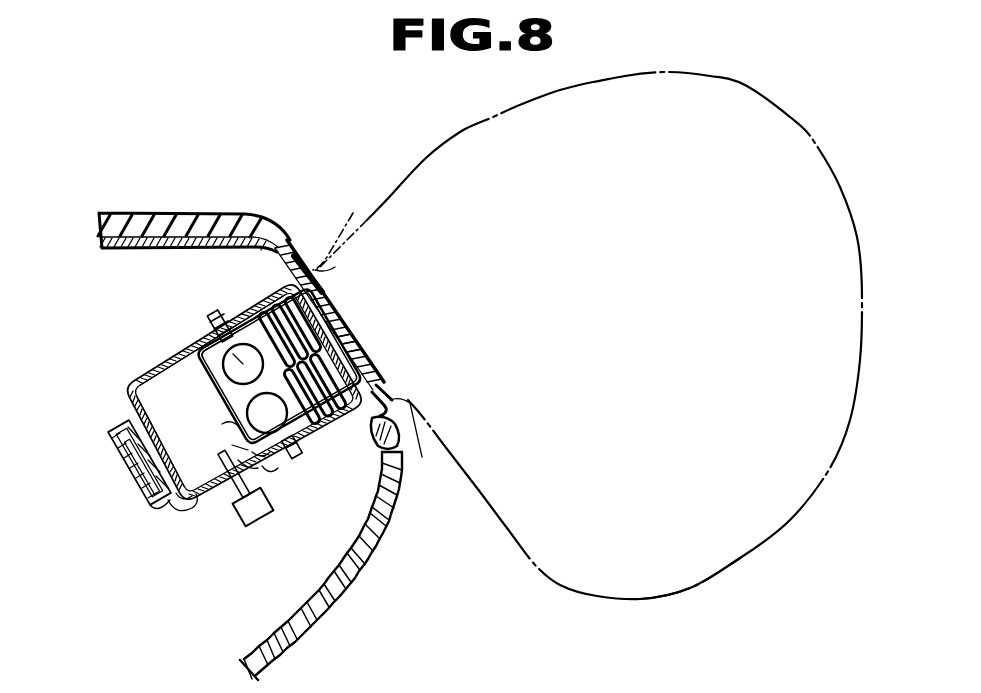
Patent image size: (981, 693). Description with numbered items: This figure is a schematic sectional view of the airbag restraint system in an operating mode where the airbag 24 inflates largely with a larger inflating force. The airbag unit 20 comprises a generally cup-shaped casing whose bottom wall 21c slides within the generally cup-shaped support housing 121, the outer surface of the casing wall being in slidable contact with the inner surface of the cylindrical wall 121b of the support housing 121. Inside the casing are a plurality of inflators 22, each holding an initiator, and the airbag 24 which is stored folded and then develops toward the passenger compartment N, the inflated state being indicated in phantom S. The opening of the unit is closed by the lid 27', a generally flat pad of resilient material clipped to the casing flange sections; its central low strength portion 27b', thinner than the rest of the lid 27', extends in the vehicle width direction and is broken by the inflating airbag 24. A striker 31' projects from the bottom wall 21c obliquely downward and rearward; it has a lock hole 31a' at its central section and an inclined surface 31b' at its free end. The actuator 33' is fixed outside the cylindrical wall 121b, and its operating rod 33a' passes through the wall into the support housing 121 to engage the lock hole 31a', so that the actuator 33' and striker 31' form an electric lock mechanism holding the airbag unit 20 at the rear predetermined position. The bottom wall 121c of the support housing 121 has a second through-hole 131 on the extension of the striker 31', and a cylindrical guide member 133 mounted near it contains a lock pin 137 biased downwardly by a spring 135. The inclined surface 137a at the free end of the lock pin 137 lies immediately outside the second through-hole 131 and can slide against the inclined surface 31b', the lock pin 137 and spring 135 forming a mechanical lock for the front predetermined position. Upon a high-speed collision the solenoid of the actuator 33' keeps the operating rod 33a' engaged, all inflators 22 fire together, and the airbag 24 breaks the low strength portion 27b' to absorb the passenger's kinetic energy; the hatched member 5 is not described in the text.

The passenger compartment N is at (860, 132).
The phantom S is at (772, 545).
The lid 27' is at (371, 350).
The low strength portion 27b' is at (395, 324).
The support housing 121 is at (124, 386).
The cylindrical wall 121b is at (163, 358).
The bottom wall 121c is at (118, 397).
The airbag unit 20 is at (238, 316).
The bottom wall 21c is at (198, 392).
The airbag 24 is at (268, 326).
The inflators 22 is at (210, 333).
The cylindrical guide member 133 is at (115, 483).
The spring 135 is at (118, 442).
The lock pin 137 is at (160, 502).
The inclined surface 137a is at (175, 512).
The second through-hole 131 is at (183, 497).
The actuator 33' is at (273, 529).
The operating rod 33a' is at (220, 510).
The striker 31' is at (208, 417).
The lock hole 31a' is at (213, 442).
The inclined surface 31b' is at (224, 471).
The steering wheel spoke 5 is at (337, 598).